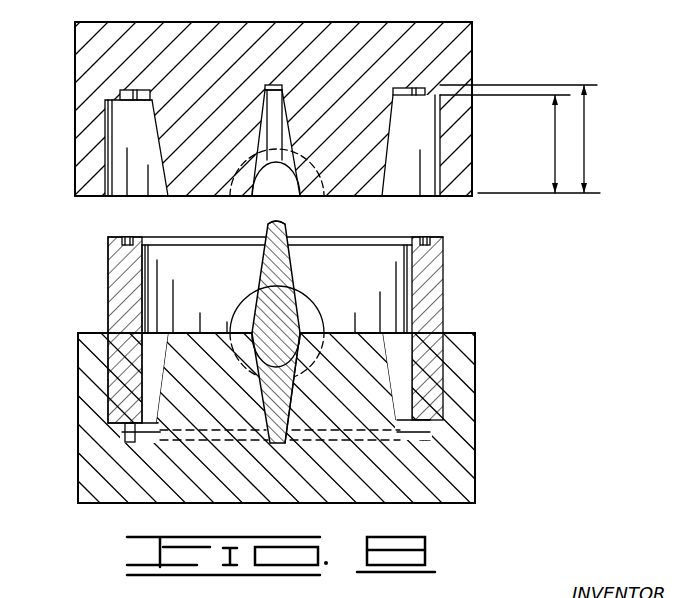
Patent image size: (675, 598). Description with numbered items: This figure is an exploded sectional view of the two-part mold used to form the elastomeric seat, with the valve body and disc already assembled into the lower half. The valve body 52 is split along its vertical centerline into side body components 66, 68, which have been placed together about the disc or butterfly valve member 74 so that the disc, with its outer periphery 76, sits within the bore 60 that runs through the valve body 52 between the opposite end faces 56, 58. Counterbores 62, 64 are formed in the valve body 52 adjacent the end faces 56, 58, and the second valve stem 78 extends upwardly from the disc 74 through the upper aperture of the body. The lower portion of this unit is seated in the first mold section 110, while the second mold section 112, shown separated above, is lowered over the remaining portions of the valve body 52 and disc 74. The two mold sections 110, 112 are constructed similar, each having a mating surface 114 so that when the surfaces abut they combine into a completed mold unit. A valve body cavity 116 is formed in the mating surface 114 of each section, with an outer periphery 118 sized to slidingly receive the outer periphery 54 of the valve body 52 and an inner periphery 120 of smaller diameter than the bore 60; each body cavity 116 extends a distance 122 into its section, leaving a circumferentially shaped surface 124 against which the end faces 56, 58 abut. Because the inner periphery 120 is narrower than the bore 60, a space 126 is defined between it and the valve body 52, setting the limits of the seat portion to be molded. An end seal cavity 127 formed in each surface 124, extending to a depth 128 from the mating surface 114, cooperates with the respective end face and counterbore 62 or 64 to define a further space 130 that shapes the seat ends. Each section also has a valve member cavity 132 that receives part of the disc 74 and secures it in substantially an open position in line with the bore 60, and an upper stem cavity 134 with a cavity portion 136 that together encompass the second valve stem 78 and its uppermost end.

The valve body 52 is at (120, 297).
The outer periphery 54 is at (108, 375).
The end face 56 is at (118, 437).
The end face 58 is at (108, 238).
The bore 60 is at (147, 280).
The counterbore 62 is at (125, 440).
The counterbore 64 is at (135, 237).
The side body component 66 is at (120, 345).
The side body component 68 is at (125, 265).
The disc or butterfly valve member 74 is at (278, 263).
The outer periphery 76 is at (283, 228).
The second valve stem 78 is at (310, 292).
The first mold section 110 is at (478, 370).
The second mold section 112 is at (475, 117).
The mating surface 114 is at (458, 195).
The valve body cavity 116 is at (120, 137).
The outer periphery 118 is at (112, 165).
The inner periphery 120 is at (157, 150).
The distance 122 is at (553, 140).
The circumferentially shaped surface 124 is at (122, 101).
The space 126 is at (312, 372).
The end seal cavity 127 is at (140, 92).
The depth 128 is at (586, 138).
The space 130 is at (400, 428).
The valve member cavity 132 is at (284, 140).
The upper stem cavity 134 is at (285, 197).
The cavity portion 136 is at (240, 200).